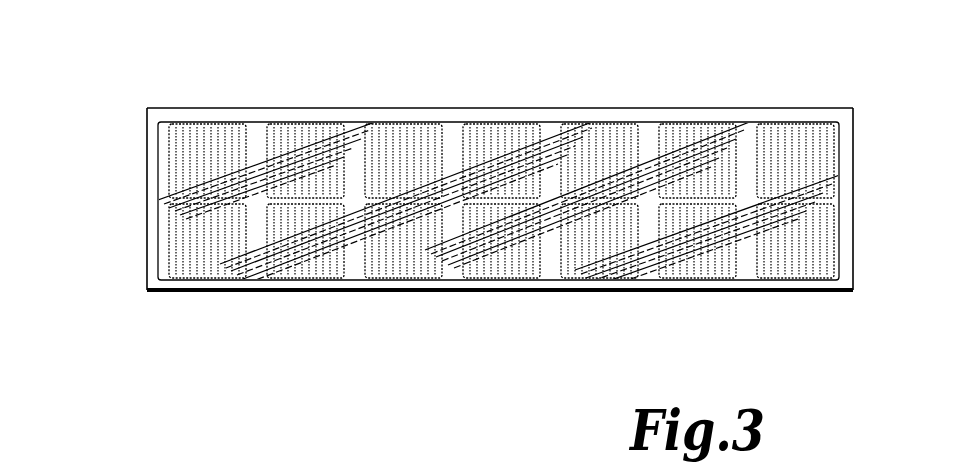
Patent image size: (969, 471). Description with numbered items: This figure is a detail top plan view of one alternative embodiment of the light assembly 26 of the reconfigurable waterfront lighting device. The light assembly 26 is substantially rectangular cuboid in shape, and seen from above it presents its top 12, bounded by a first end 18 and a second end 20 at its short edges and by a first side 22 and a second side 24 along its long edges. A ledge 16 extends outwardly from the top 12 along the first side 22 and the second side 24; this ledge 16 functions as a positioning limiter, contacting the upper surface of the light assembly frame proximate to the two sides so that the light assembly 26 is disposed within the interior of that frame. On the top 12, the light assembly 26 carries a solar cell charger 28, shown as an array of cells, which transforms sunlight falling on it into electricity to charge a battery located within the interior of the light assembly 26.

The top 12 is at (641, 143).
The ledge 16 is at (496, 117).
The first end 18 is at (146, 127).
The second end 20 is at (853, 154).
The first side 22 is at (526, 297).
The second side 24 is at (291, 104).
The light assembly 26 is at (123, 192).
The solar cell charger 28 is at (217, 247).